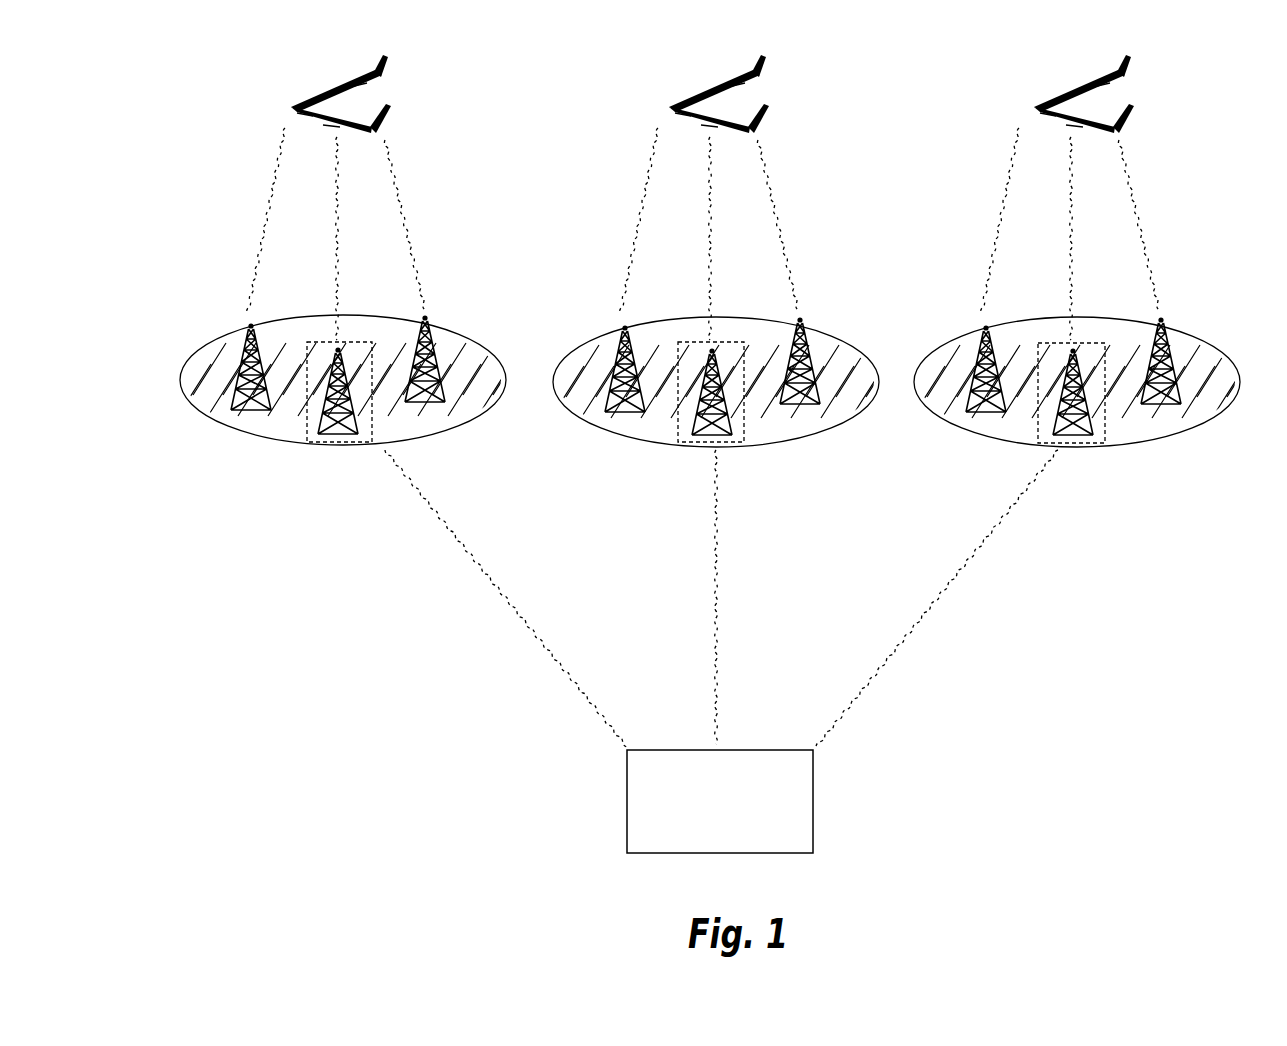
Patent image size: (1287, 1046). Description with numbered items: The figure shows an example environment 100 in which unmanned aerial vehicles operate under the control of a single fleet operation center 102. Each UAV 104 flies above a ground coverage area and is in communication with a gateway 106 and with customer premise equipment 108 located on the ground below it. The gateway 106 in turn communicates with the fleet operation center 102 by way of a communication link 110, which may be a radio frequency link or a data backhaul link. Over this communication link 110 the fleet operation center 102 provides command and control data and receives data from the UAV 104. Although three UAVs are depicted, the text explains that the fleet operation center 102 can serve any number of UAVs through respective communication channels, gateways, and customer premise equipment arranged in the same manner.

The environment 100 is at (149, 130).
The fleet operation center 102 is at (720, 801).
The UAV 104 is at (293, 77).
The gateway 106 is at (317, 442).
The customer premise equipment 108 is at (220, 304).
The communication link 110 is at (523, 621).